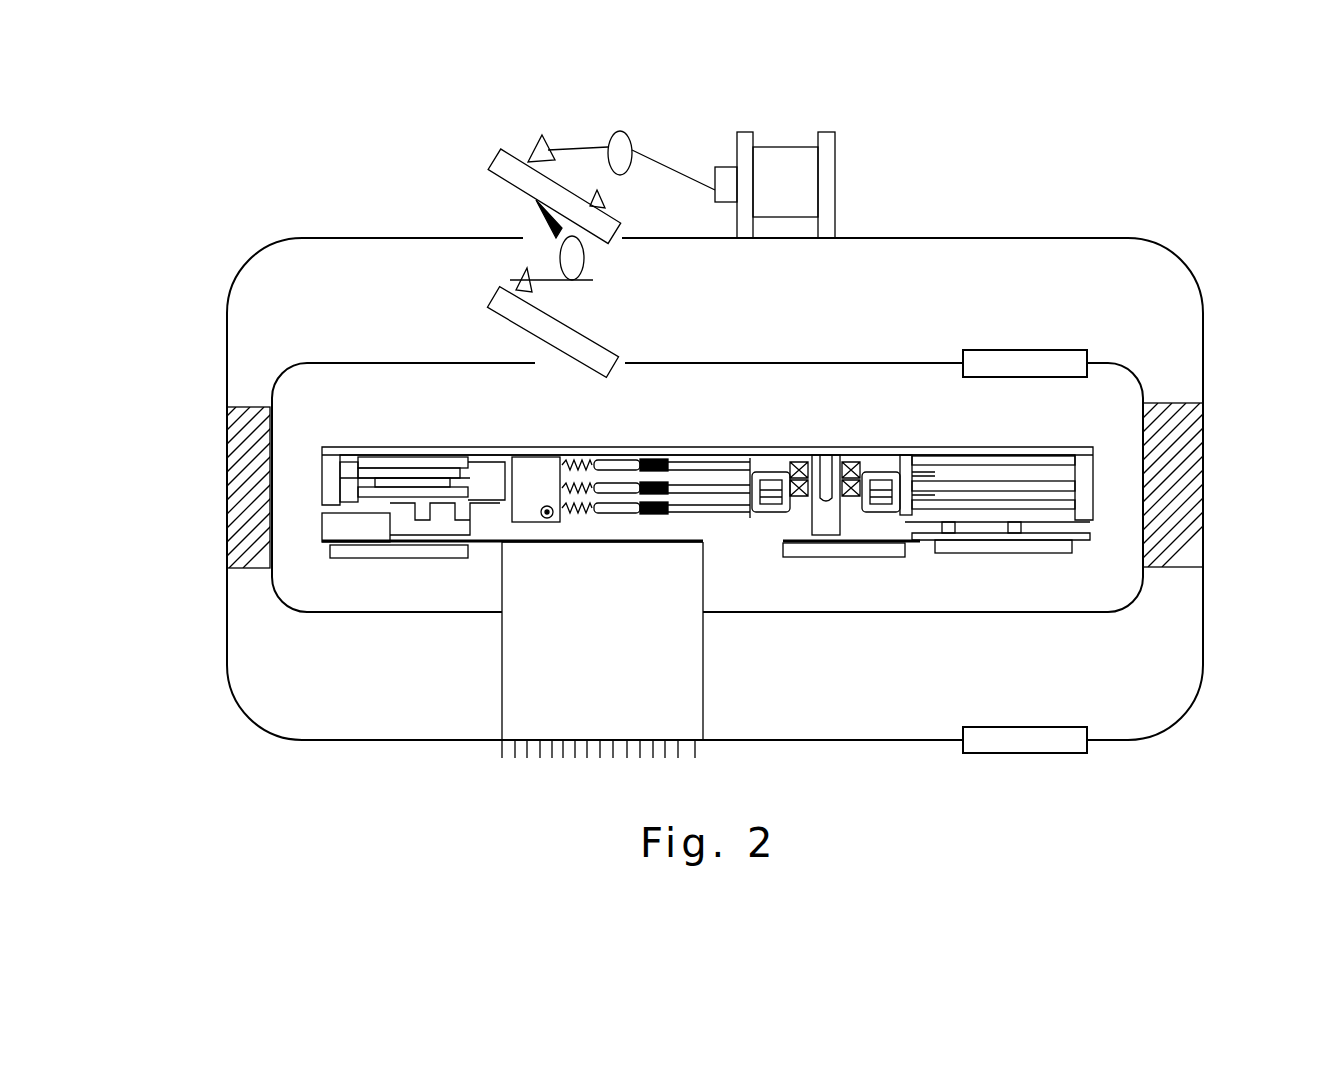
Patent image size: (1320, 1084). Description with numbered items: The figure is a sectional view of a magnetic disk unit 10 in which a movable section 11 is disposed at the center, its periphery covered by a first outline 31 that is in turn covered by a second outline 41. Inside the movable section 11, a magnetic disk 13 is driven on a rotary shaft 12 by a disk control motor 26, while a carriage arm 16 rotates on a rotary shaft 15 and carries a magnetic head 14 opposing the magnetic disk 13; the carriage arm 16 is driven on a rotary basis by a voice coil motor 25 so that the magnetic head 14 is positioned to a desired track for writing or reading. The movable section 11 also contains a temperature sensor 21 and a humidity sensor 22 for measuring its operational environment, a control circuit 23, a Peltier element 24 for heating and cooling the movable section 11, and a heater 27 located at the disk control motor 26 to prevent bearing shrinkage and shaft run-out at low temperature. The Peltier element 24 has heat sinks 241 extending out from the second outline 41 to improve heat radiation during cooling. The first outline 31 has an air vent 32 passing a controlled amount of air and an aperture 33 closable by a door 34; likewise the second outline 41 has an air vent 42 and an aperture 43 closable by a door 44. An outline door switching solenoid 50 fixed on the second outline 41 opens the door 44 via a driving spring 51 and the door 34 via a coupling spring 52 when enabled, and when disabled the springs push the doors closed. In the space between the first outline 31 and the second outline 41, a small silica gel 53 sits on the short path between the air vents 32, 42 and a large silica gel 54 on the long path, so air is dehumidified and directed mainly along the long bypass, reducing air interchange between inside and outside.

The magnetic disk unit 10 is at (1024, 198).
The movable section 11 is at (933, 430).
The rotary shaft 12 is at (823, 440).
The magnetic disk 13 is at (975, 505).
The magnetic head 14 is at (703, 480).
The rotary shaft 15 is at (549, 440).
The carriage arm 16 is at (632, 480).
The temperature sensor 21 is at (947, 535).
The humidity sensor 22 is at (1013, 535).
The control circuit 23 is at (420, 548).
The Peltier element 24 is at (614, 677).
The heat sinks 241 is at (575, 762).
The voice coil motor 25 is at (428, 462).
The disk control motor 26 is at (870, 448).
The heater 27 is at (836, 548).
The first outline 31 is at (1116, 362).
The air vent 32 is at (1024, 350).
The aperture 33 is at (553, 322).
The door 34 is at (620, 342).
The second outline 41 is at (1205, 296).
The air vent 42 is at (1040, 753).
The aperture 43 is at (550, 191).
The door 44 is at (513, 148).
The outline door switching solenoid 50 is at (800, 125).
The driving spring 51 is at (665, 156).
The coupling spring 52 is at (584, 282).
The small silica gel 53 is at (1178, 447).
The large silica gel 54 is at (237, 456).